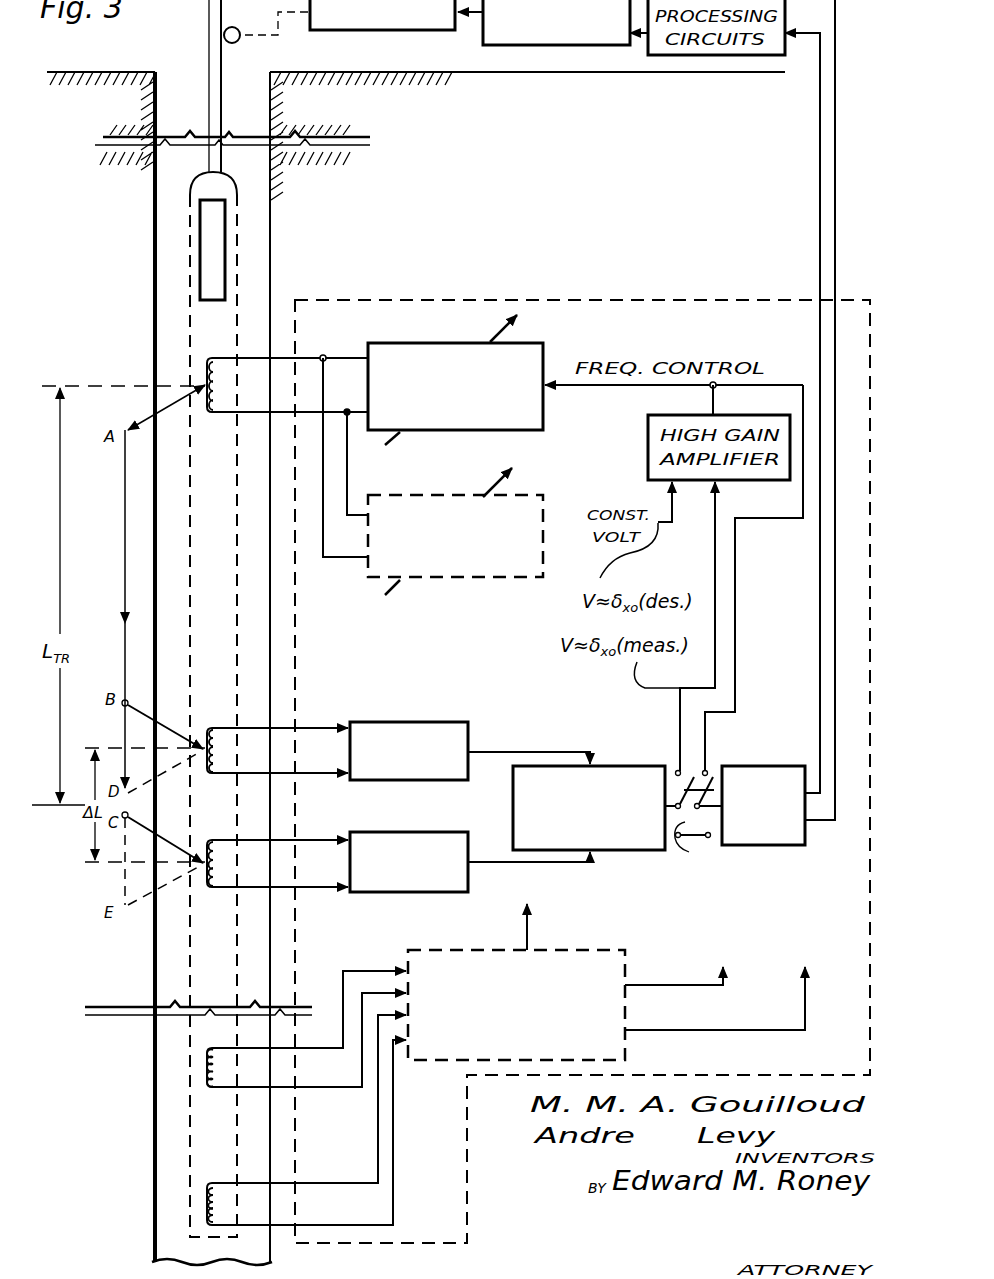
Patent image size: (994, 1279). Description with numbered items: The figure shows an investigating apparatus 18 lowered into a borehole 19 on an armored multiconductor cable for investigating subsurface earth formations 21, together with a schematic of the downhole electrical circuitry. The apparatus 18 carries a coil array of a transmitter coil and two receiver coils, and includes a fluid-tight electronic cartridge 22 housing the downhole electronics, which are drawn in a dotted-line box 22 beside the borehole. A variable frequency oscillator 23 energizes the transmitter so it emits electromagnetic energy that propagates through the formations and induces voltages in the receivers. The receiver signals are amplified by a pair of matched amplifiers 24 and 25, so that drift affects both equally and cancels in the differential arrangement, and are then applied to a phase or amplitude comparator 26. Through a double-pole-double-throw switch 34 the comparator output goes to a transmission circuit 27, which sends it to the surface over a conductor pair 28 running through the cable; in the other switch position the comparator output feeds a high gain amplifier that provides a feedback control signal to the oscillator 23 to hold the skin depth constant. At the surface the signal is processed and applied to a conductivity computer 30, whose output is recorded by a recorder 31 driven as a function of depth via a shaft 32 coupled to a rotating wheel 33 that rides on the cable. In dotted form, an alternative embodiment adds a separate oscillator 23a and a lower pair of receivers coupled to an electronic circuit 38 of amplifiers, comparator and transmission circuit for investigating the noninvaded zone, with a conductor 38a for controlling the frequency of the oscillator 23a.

The investigating apparatus 18 is at (240, 300).
The borehole 19 is at (138, 278).
The subsurface earth formations 21 is at (128, 183).
The fluid-tight electronic cartridge 22 is at (228, 218).
The variable frequency oscillator 23 is at (451, 340).
The separate oscillator 23a is at (462, 580).
The matched amplifier 24 is at (415, 720).
The matched amplifier 25 is at (405, 894).
The phase or amplitude comparator 26 is at (612, 762).
The transmission circuit 27 is at (768, 765).
The conductor pair 28 is at (835, 582).
The conductivity computer 30 is at (533, 45).
The recorder 31 is at (378, 33).
The shaft 32 is at (266, 38).
The rotating wheel 33 is at (236, 45).
The double-pole-double-throw switch 34 is at (693, 822).
The electronic circuit 38 is at (575, 950).
The conductor 38a is at (525, 943).